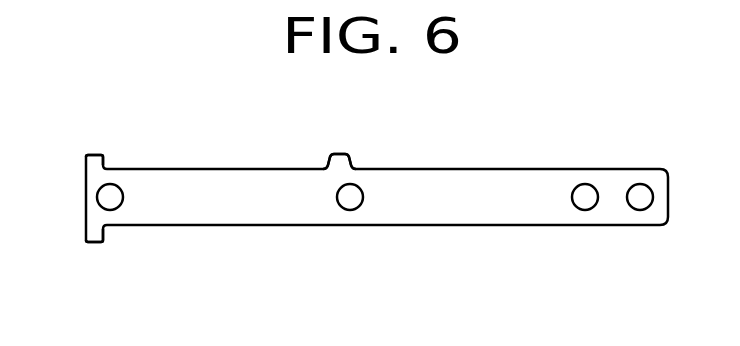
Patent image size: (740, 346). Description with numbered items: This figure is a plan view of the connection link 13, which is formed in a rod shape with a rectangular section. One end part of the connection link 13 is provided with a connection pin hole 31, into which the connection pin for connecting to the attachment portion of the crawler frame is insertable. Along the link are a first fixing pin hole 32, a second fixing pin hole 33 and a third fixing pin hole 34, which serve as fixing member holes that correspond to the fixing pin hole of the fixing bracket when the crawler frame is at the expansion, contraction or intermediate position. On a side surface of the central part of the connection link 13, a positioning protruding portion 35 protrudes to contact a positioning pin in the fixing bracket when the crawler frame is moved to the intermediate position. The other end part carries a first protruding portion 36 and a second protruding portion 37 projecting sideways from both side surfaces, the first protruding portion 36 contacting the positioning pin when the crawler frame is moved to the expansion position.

The connection link 13 is at (568, 97).
The connection pin hole 31 is at (640, 188).
The first fixing pin hole 32 is at (108, 203).
The second fixing pin hole 33 is at (586, 187).
The third fixing pin hole 34 is at (350, 186).
The positioning protruding portion 35 is at (338, 152).
The first protruding portion 36 is at (94, 238).
The second protruding portion 37 is at (97, 155).